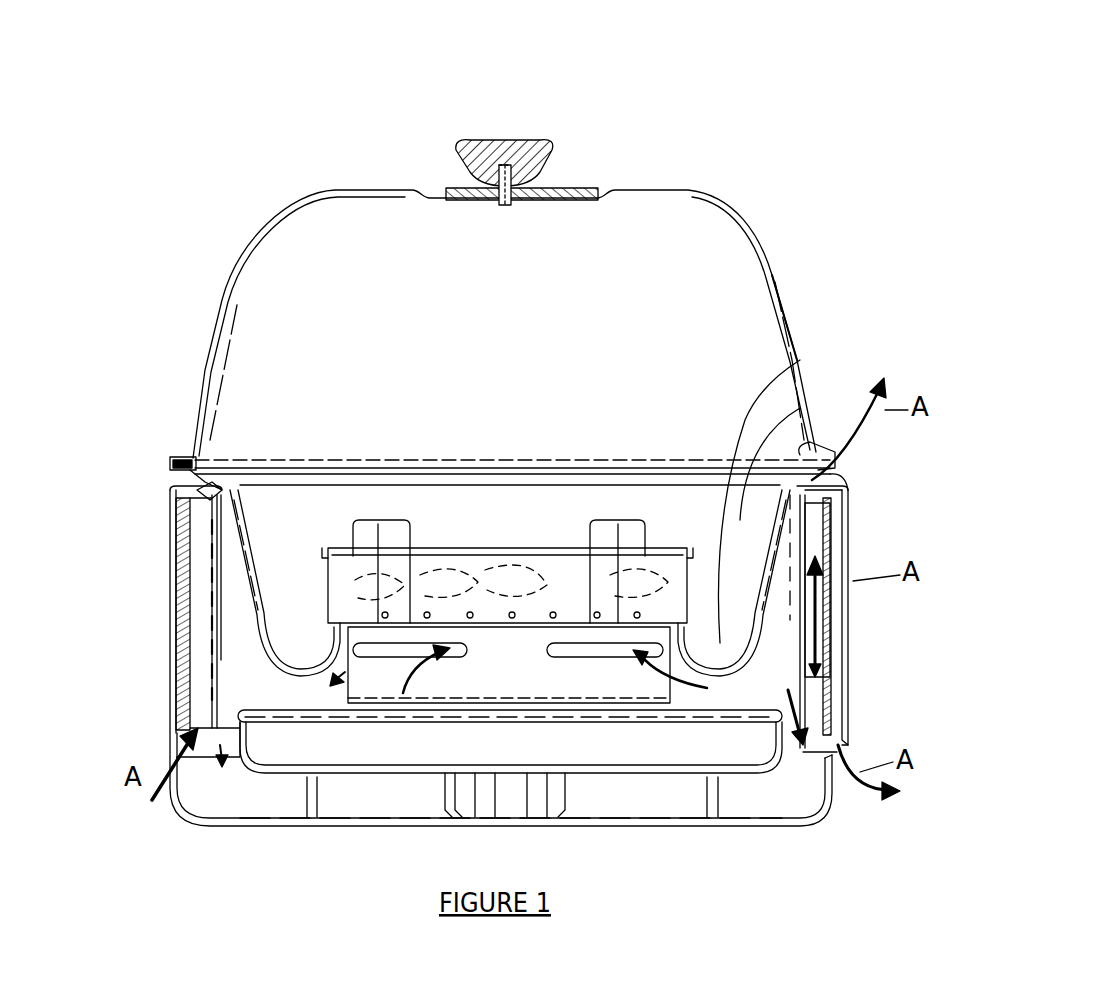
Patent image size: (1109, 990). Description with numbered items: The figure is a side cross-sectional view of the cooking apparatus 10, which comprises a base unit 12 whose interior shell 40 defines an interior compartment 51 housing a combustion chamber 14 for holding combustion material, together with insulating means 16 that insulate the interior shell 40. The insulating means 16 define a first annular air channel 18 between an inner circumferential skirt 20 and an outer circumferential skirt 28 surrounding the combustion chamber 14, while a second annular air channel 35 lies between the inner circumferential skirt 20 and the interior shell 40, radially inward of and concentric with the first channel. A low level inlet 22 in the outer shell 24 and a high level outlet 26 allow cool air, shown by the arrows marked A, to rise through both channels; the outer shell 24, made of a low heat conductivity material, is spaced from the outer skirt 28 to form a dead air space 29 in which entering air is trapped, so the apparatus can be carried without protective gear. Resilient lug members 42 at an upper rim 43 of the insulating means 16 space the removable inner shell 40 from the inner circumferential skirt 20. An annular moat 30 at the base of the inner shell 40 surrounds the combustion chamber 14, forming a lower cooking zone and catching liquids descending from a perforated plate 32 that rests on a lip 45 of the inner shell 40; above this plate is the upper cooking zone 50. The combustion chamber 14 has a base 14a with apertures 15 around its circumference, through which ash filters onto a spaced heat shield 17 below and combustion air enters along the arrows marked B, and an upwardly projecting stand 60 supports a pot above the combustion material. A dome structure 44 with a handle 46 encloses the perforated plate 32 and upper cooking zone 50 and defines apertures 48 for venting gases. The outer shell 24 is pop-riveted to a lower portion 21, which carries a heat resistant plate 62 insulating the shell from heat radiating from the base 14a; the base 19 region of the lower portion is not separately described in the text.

The cooking apparatus 10 is at (775, 122).
The base unit 12 is at (130, 492).
The combustion chamber 14 is at (453, 560).
The base 14a is at (600, 714).
The apertures 15 is at (337, 672).
The insulating means 16 is at (192, 647).
The heat shield 17 is at (652, 712).
The first annular air channel 18 is at (215, 582).
The base 19 is at (743, 755).
The inner circumferential skirt 20 is at (220, 664).
The lower portion 21 is at (232, 866).
The low level inlet 22 is at (205, 775).
The outer shell 24 is at (176, 741).
The high level outlet 26 is at (848, 474).
The outer circumferential skirt 28 is at (190, 538).
The dead air space 29 is at (810, 537).
The annular moat 30 is at (778, 425).
The perforated plate 32 is at (760, 400).
The second annular air channel 35 is at (785, 643).
The interior shell 40 is at (305, 484).
The resilient lug members 42 is at (182, 468).
The upper rim 43 is at (846, 490).
The dome structure 44 is at (770, 250).
The lip 45 is at (790, 446).
The handle 46 is at (528, 140).
The apertures 48 is at (628, 188).
The upper cooking zone 50 is at (413, 624).
The interior compartment 51 is at (451, 503).
The upwardly projecting stand 60 is at (530, 623).
The heat resistant plate 62 is at (507, 763).